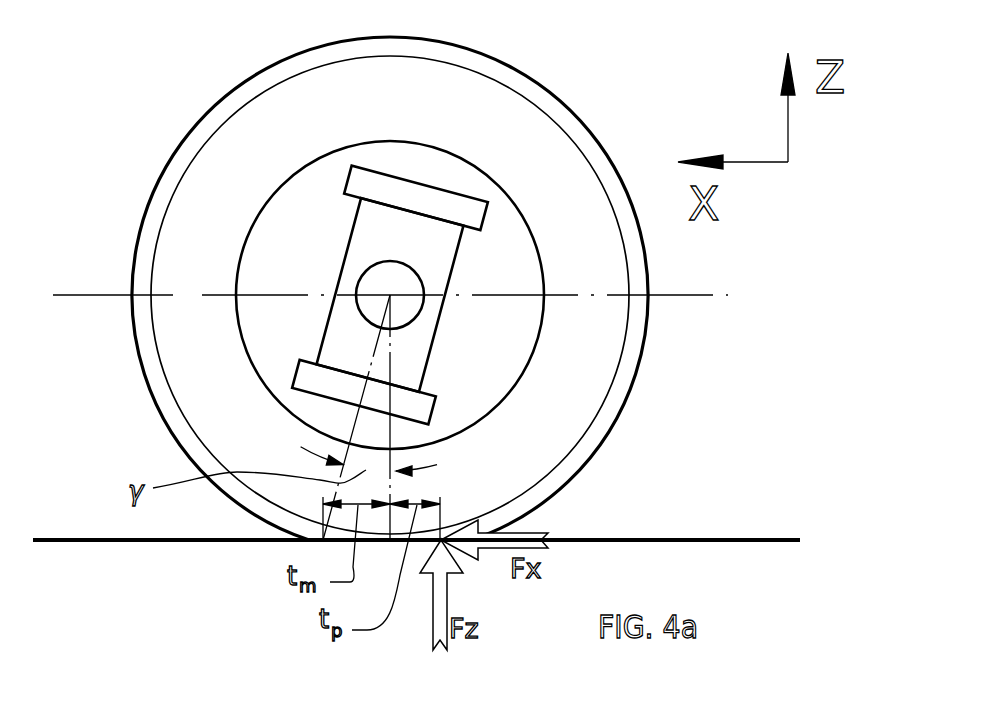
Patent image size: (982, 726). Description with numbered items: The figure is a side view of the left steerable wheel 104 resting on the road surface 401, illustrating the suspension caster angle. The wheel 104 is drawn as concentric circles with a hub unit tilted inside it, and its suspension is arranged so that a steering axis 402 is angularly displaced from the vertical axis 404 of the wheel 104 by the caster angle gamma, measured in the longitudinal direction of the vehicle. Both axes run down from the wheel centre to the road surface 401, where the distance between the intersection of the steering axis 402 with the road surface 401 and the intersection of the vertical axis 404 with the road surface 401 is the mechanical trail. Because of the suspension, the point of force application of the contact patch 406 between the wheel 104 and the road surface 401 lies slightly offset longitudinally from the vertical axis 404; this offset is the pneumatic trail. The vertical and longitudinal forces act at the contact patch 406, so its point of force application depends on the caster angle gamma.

The left steerable wheel 104 is at (587, 337).
The road surface 401 is at (153, 541).
The steering axis 402 is at (378, 360).
The vertical axis 404 is at (390, 362).
The contact patch 406 is at (444, 541).